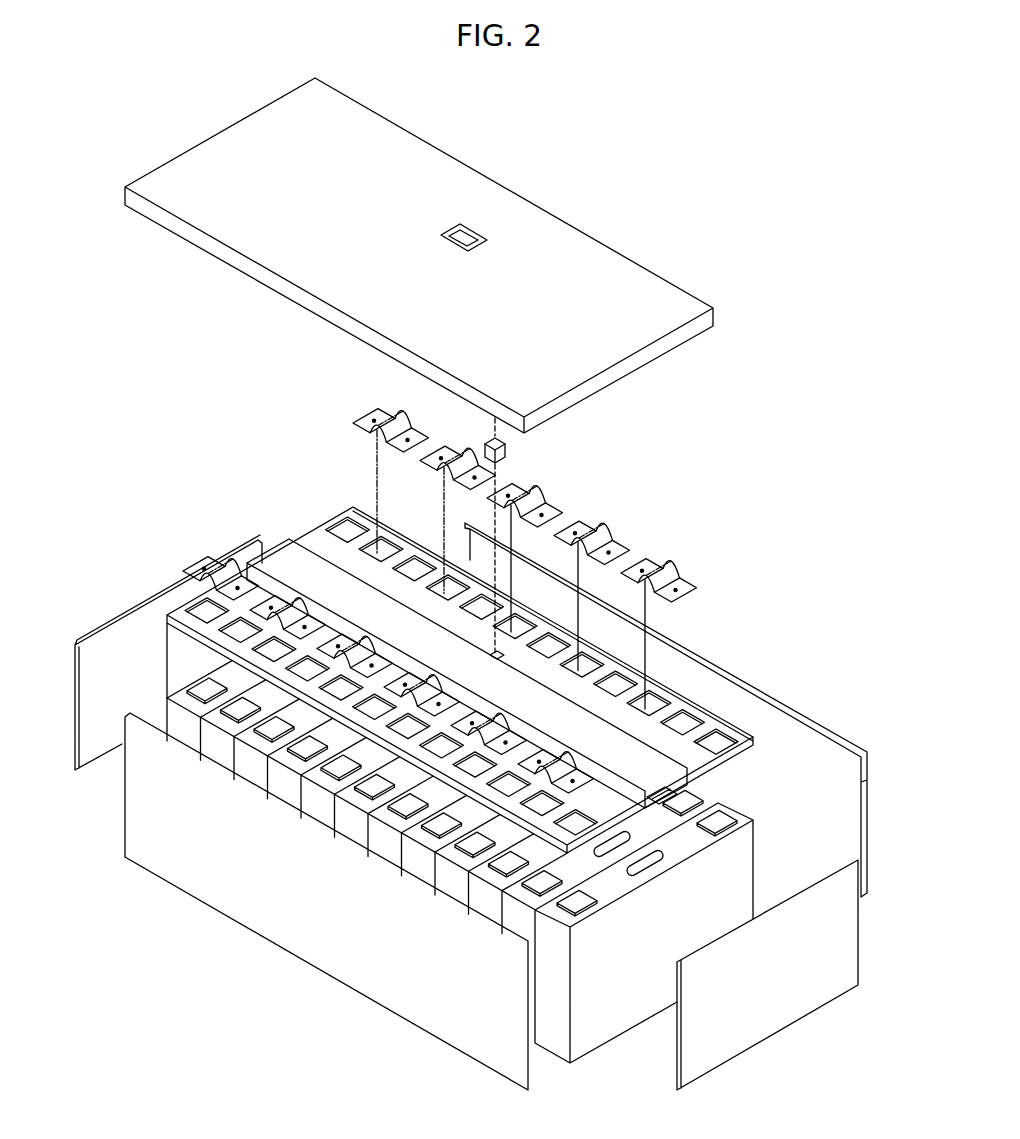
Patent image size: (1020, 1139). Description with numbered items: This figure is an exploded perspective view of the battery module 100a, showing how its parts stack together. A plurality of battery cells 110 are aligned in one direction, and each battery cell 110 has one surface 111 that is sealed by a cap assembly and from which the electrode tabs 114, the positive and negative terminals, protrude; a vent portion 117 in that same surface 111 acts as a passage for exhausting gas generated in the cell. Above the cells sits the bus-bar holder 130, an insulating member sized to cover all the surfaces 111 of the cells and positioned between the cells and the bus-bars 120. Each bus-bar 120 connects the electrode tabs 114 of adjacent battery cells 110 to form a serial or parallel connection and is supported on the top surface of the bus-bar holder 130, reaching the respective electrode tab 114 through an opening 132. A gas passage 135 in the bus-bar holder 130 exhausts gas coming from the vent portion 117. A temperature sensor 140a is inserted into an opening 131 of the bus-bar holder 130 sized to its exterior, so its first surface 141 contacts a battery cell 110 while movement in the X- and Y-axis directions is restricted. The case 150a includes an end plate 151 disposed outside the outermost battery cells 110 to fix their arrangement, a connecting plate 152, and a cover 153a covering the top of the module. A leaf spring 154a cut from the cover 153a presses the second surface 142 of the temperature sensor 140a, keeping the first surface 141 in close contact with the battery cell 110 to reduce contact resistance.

The battery module 100a is at (777, 138).
The battery cell 110 is at (603, 1031).
The one surface 111 is at (223, 677).
The electrode tab 114 is at (231, 712).
The vent portion 117 is at (651, 863).
The bus-bar 120 is at (690, 592).
The bus-bar holder 130 is at (347, 560).
The opening 131 is at (500, 652).
The opening 132 is at (411, 563).
The gas passage 135 is at (680, 795).
The temperature sensor 140a is at (478, 440).
The first surface 141 is at (502, 460).
The second surface 142 is at (500, 446).
The case 150a is at (800, 526).
The end plate 151 is at (823, 893).
The connecting plate 152 is at (722, 663).
The cover 153a is at (622, 373).
The leaf spring 154a is at (470, 236).